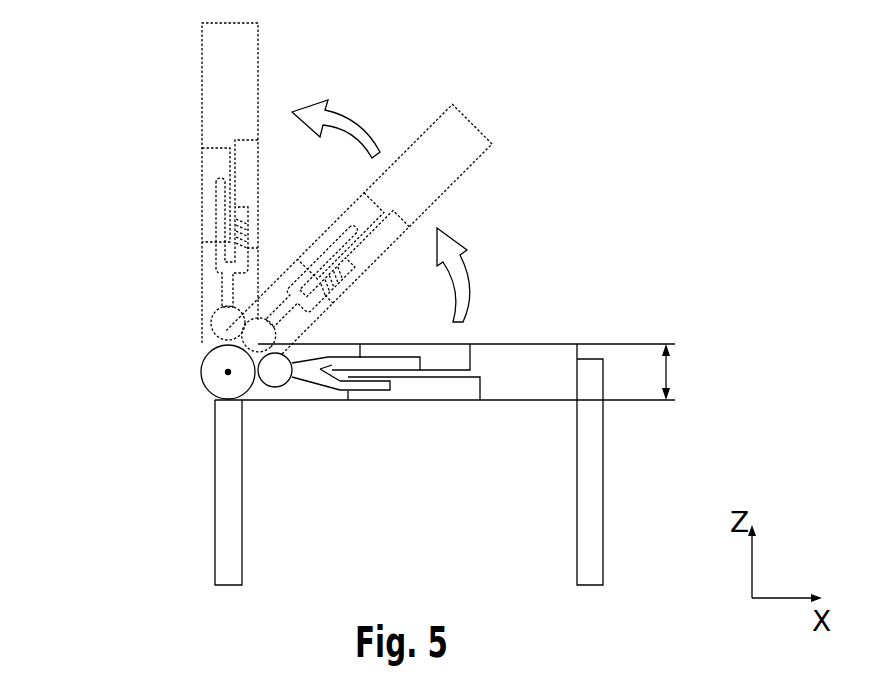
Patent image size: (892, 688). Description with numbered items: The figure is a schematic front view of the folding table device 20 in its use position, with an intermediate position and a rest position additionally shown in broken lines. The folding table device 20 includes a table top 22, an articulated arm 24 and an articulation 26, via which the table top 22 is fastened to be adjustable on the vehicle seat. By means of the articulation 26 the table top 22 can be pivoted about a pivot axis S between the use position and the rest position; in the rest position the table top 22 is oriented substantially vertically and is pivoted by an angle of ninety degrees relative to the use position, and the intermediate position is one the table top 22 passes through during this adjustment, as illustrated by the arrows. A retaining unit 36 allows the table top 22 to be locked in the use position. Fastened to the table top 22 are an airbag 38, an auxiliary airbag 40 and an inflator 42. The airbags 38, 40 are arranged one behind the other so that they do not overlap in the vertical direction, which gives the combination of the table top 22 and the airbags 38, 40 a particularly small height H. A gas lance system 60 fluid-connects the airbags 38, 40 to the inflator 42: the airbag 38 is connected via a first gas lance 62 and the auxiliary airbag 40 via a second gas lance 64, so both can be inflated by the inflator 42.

The folding table device 20 is at (135, 92).
The table top 22 is at (538, 356).
The articulated arm 24 is at (222, 473).
The articulation 26 is at (217, 362).
The pivot axis S is at (225, 373).
The retaining unit 36 is at (588, 472).
The airbag 38 is at (463, 350).
The auxiliary airbag 40 is at (445, 389).
The inflator 42 is at (283, 389).
The gas lance system 60 is at (305, 397).
The first gas lance 62 is at (403, 362).
The second gas lance 64 is at (340, 386).
The height H is at (668, 375).